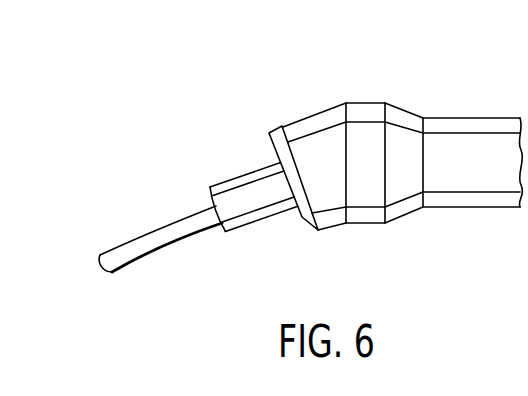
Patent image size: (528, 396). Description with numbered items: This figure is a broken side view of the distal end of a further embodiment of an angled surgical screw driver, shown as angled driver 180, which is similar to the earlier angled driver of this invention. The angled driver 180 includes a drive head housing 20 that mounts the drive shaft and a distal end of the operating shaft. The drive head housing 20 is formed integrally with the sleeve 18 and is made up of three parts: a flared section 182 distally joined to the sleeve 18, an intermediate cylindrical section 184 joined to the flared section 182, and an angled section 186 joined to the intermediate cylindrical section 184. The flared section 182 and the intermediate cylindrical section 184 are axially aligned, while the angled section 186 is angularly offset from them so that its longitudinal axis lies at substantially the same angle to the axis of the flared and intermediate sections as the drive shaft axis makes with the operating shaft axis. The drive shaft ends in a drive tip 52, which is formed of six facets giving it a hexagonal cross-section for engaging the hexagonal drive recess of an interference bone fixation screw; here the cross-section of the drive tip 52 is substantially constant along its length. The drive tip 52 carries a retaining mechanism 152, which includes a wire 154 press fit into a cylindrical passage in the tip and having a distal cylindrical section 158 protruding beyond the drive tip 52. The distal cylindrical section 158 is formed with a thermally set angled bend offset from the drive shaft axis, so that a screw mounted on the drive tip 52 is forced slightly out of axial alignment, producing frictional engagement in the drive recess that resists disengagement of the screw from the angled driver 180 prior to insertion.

The sleeve 18 is at (485, 116).
The drive head housing 20 is at (386, 224).
The drive tip 52 is at (240, 177).
The retaining mechanism 152 is at (133, 237).
The wire 154 is at (148, 248).
The distal cylindrical section 158 is at (112, 271).
The angled driver 180 is at (292, 247).
The flared section 182 is at (405, 210).
The intermediate cylindrical section 184 is at (358, 223).
The angled section 186 is at (299, 120).